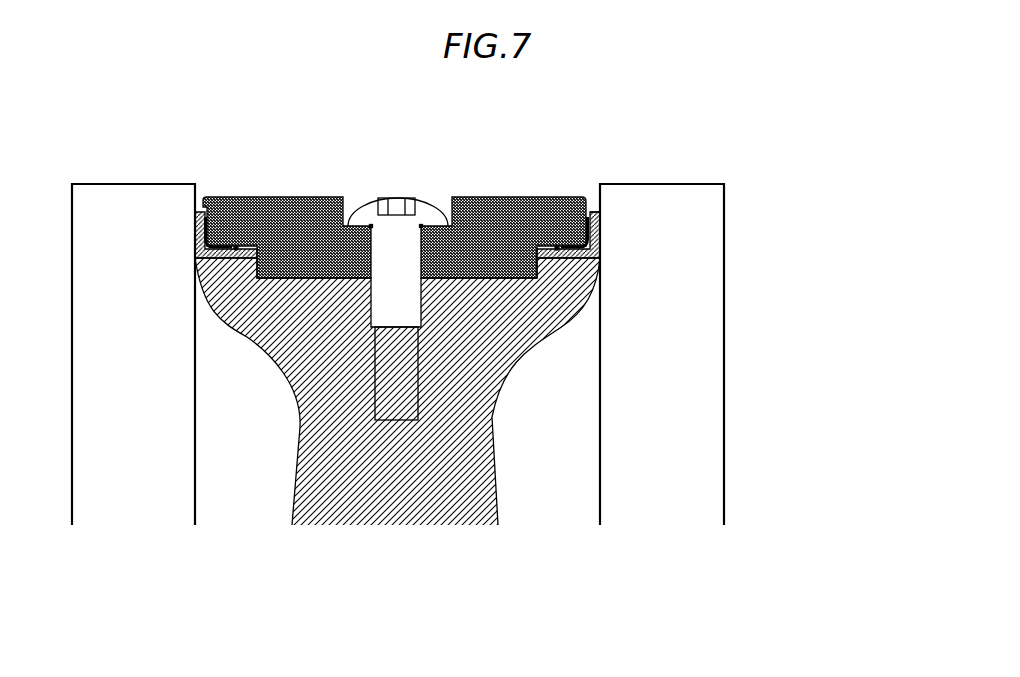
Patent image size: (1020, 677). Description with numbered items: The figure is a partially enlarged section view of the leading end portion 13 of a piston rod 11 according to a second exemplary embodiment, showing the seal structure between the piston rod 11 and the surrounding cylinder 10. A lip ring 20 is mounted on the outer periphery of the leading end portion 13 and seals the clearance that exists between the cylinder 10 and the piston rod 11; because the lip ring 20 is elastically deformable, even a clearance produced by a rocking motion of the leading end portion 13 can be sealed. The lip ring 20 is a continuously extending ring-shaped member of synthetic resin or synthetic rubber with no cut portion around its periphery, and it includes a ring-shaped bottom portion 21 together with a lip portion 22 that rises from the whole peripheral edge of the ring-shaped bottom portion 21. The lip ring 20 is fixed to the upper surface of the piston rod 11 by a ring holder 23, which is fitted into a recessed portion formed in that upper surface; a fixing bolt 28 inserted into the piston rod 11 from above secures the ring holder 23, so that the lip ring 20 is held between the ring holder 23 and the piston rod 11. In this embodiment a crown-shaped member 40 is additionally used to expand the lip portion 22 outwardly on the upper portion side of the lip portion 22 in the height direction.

The cylinder 10 is at (685, 327).
The piston rod 11 is at (250, 490).
The leading end portion 13 is at (510, 340).
The lip ring 20 is at (537, 261).
The ring-shaped bottom portion 21 is at (597, 272).
The lip portion 22 is at (600, 232).
The ring holder 23 is at (487, 198).
The fixing bolt 28 is at (430, 198).
The crown-shaped member 40 is at (598, 208).